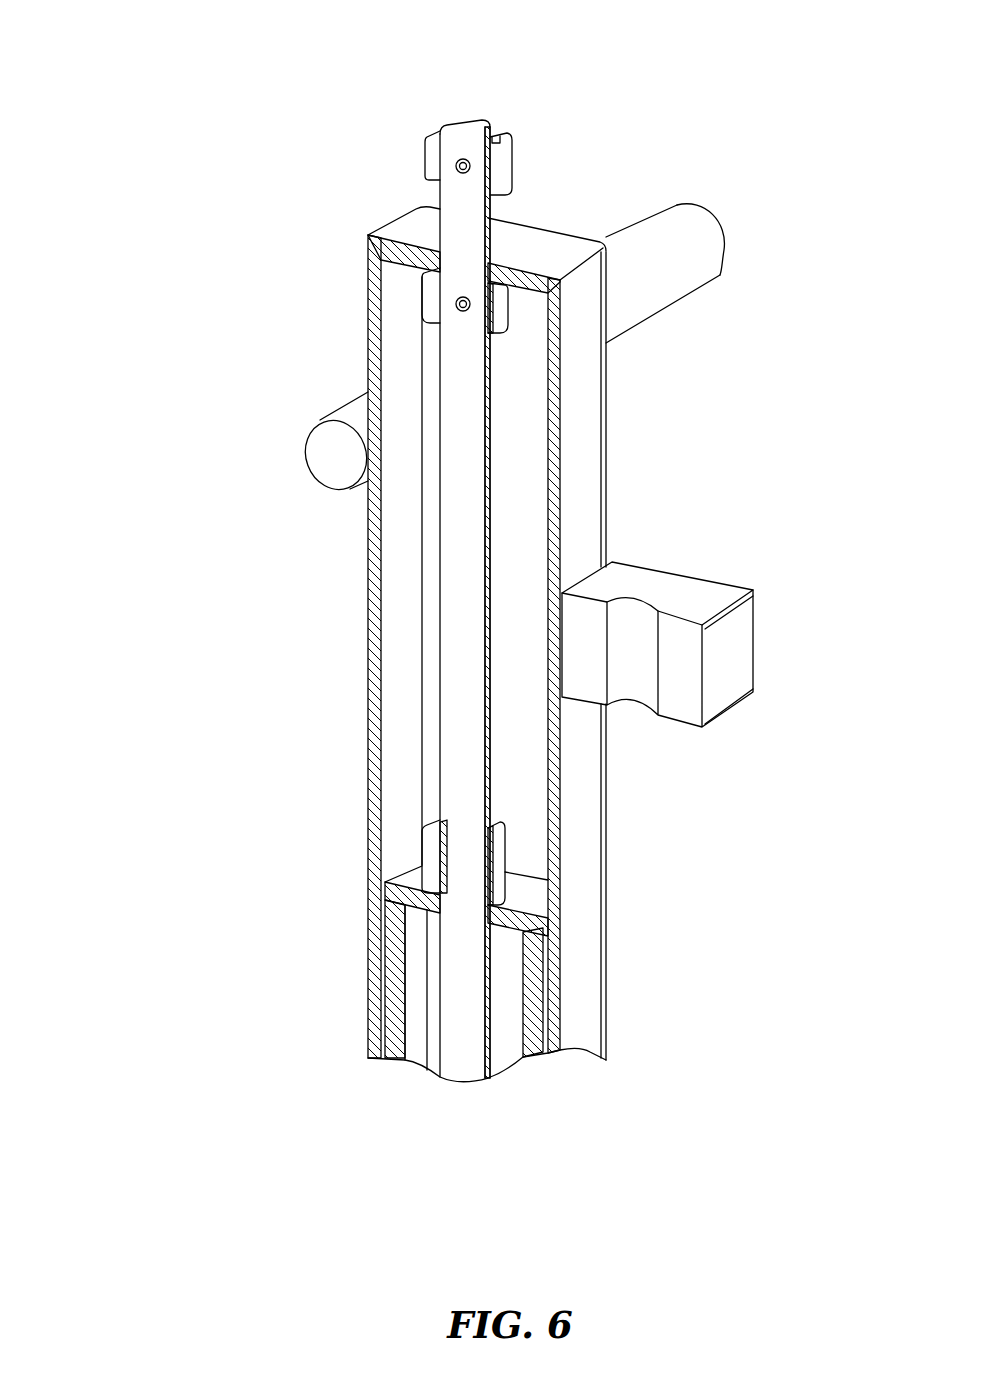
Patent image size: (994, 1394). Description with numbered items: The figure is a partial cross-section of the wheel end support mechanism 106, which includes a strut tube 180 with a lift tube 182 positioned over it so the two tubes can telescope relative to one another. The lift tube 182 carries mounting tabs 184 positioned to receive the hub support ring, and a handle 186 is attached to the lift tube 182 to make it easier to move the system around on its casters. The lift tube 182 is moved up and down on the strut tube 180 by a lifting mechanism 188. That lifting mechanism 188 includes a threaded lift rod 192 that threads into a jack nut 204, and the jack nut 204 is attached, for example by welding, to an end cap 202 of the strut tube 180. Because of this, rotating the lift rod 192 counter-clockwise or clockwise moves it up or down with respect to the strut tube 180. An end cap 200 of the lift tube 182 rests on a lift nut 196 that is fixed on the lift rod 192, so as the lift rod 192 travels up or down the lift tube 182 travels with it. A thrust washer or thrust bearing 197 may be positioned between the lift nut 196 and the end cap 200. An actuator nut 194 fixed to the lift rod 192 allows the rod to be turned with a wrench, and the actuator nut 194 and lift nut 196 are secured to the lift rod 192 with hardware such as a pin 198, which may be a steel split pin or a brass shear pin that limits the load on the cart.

The wheel end support mechanism 106 is at (168, 392).
The strut tube 180 is at (397, 1048).
The lift tube 182 is at (368, 772).
The mounting tabs 184 is at (748, 625).
The handle 186 is at (723, 256).
The lifting mechanism 188 is at (530, 120).
The threaded lift rod 192 is at (472, 122).
The actuator nut 194 is at (430, 157).
The lift nut 196 is at (432, 298).
The thrust washer or thrust bearing 197 is at (422, 273).
The pin 198 is at (455, 168).
The end cap 200 is at (555, 243).
The end cap 202 is at (525, 895).
The jack nut 204 is at (432, 867).